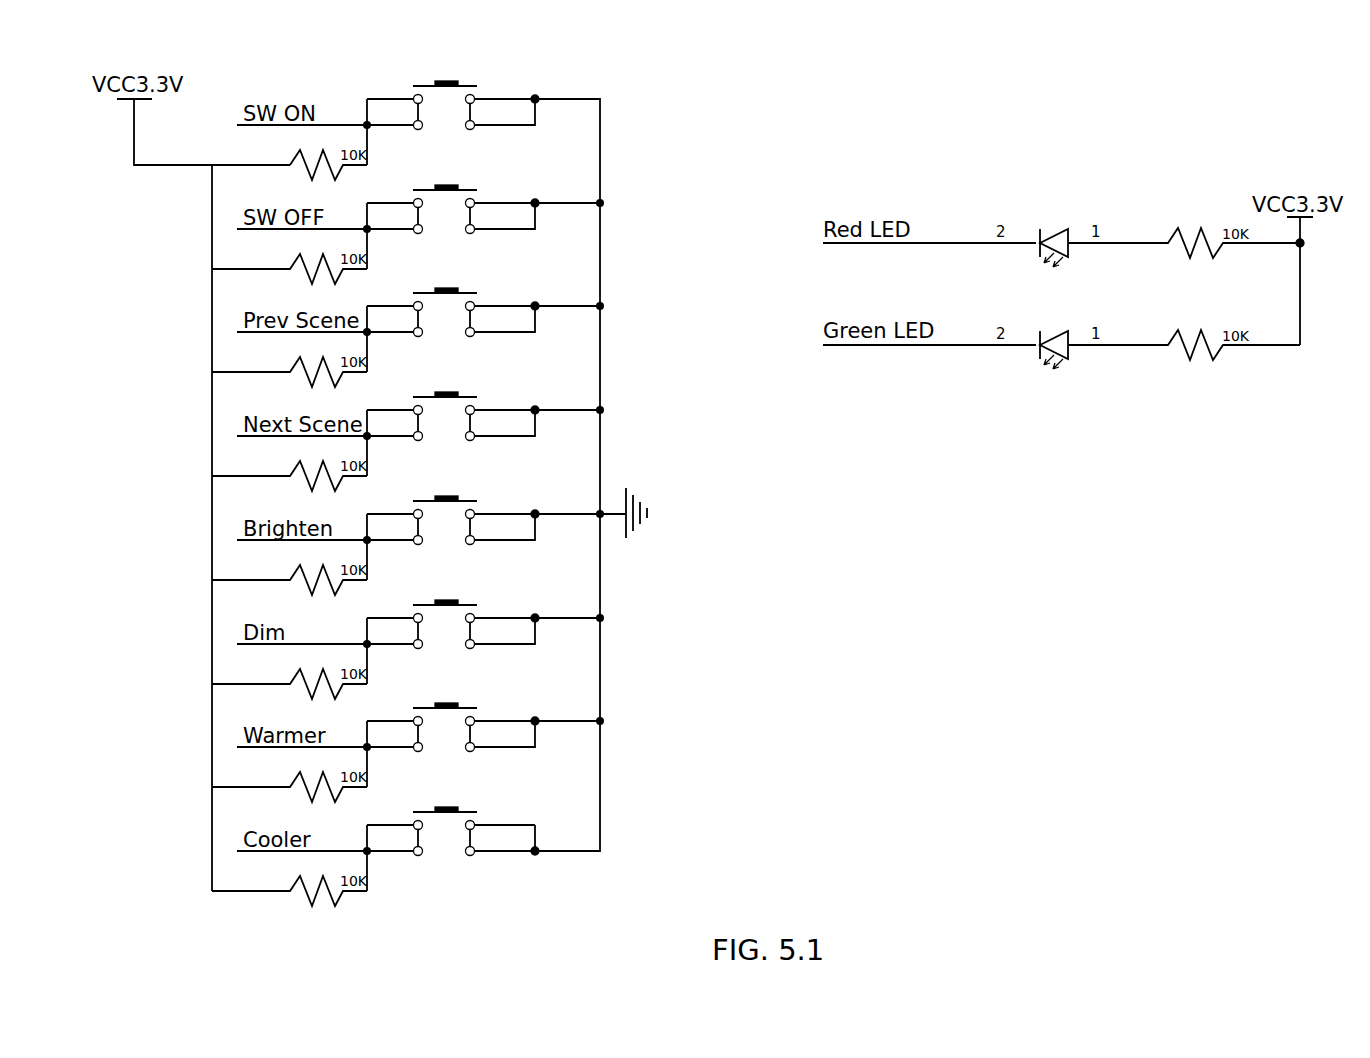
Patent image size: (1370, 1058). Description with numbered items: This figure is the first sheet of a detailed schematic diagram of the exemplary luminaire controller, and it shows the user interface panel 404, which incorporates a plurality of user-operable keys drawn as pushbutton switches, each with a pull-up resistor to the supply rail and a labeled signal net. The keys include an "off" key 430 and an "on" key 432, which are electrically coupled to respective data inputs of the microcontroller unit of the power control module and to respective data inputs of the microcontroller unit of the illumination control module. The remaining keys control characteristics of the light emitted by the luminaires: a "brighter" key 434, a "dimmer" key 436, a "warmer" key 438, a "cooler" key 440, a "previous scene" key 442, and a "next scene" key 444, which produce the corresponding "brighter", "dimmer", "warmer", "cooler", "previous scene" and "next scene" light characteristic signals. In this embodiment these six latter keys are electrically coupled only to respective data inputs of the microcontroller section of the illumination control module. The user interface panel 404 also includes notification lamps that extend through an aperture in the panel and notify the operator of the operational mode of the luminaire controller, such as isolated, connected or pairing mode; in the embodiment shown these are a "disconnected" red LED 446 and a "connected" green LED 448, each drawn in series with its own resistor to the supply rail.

The user interface panel 404 is at (965, 756).
The "off" key 430 is at (470, 182).
The "on" key 432 is at (470, 78).
The "brighter" key 434 is at (470, 490).
The "dimmer" key 436 is at (470, 597).
The "warmer" key 438 is at (470, 700).
The "cooler" key 440 is at (470, 804).
The "previous scene" key 442 is at (470, 285).
The "next scene" key 444 is at (470, 389).
The "disconnected" red LED 446 is at (1037, 233).
The "connected" green LED 448 is at (1037, 335).